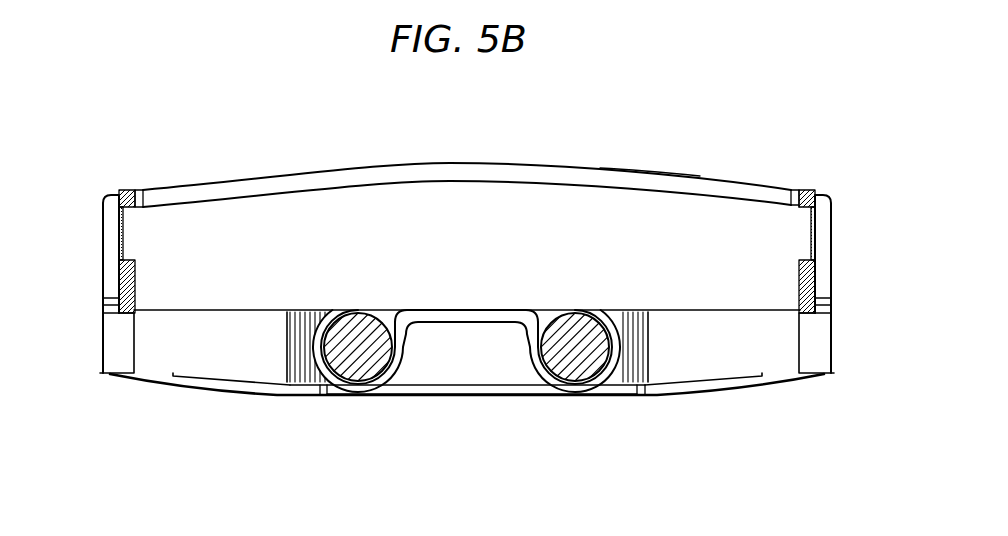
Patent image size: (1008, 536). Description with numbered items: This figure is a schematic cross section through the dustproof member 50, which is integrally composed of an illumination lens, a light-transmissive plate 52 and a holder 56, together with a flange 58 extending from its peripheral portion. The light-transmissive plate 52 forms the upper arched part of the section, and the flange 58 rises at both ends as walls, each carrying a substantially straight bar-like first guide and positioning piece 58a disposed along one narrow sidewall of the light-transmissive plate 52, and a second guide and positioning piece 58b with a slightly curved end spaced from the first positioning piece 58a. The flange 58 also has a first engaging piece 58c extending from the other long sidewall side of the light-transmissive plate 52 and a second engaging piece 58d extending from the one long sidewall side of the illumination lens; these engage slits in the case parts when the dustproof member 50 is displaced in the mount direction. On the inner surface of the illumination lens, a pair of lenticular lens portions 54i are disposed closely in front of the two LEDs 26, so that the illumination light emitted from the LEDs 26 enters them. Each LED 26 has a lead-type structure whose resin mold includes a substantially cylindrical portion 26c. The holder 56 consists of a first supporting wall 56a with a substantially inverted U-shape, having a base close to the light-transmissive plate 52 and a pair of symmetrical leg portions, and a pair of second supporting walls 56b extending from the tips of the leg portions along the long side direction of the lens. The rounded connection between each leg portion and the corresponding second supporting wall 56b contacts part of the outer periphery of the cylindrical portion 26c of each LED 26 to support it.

The dustproof member 50 is at (210, 184).
The light-transmissive plate 52 is at (738, 223).
The first engaging piece 58c is at (655, 183).
The flange 58 is at (99, 251).
The first guide and positioning piece 58a is at (112, 205).
The second guide and positioning piece 58b is at (108, 352).
The second engaging piece 58d is at (533, 390).
The lenticular lens portions 54i is at (290, 382).
The LED 26 is at (385, 325).
The cylindrical portion 26c is at (398, 335).
The holder 56 is at (481, 310).
The first supporting wall 56a is at (375, 385).
The second supporting walls 56b is at (320, 385).